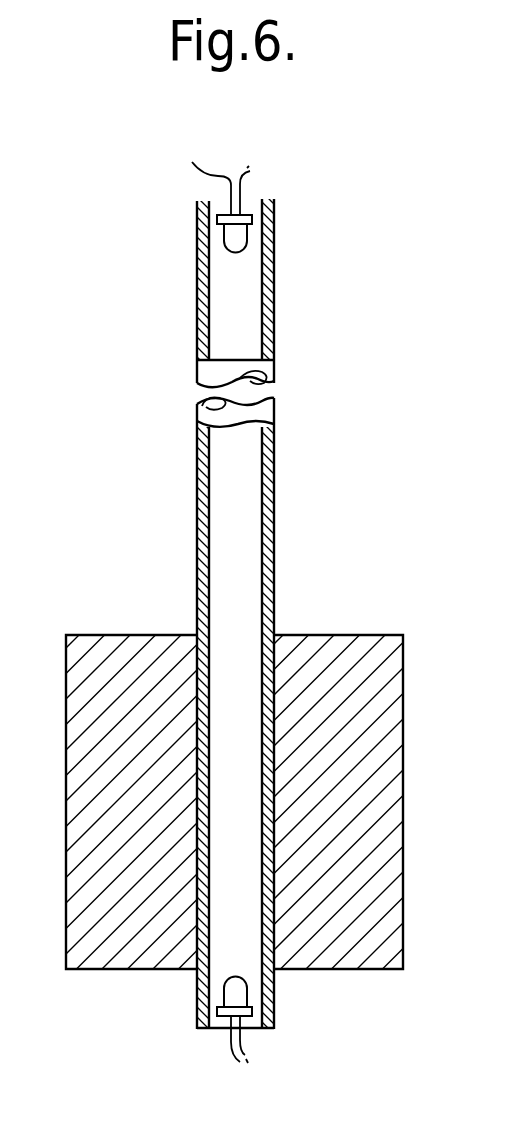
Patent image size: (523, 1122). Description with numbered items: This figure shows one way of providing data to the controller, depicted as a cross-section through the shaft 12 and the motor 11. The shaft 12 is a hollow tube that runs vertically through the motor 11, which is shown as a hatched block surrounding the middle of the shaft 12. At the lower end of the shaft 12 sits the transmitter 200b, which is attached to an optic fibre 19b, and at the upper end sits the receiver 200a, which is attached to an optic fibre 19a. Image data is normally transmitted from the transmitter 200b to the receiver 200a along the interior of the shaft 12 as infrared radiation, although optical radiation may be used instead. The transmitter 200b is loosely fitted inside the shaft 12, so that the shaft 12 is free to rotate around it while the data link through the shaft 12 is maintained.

The motor 11 is at (108, 956).
The shaft 12 is at (274, 562).
The optic fibre 19a is at (202, 172).
The optic fibre 19b is at (236, 1060).
The receiver 200a is at (238, 238).
The transmitter 200b is at (243, 992).